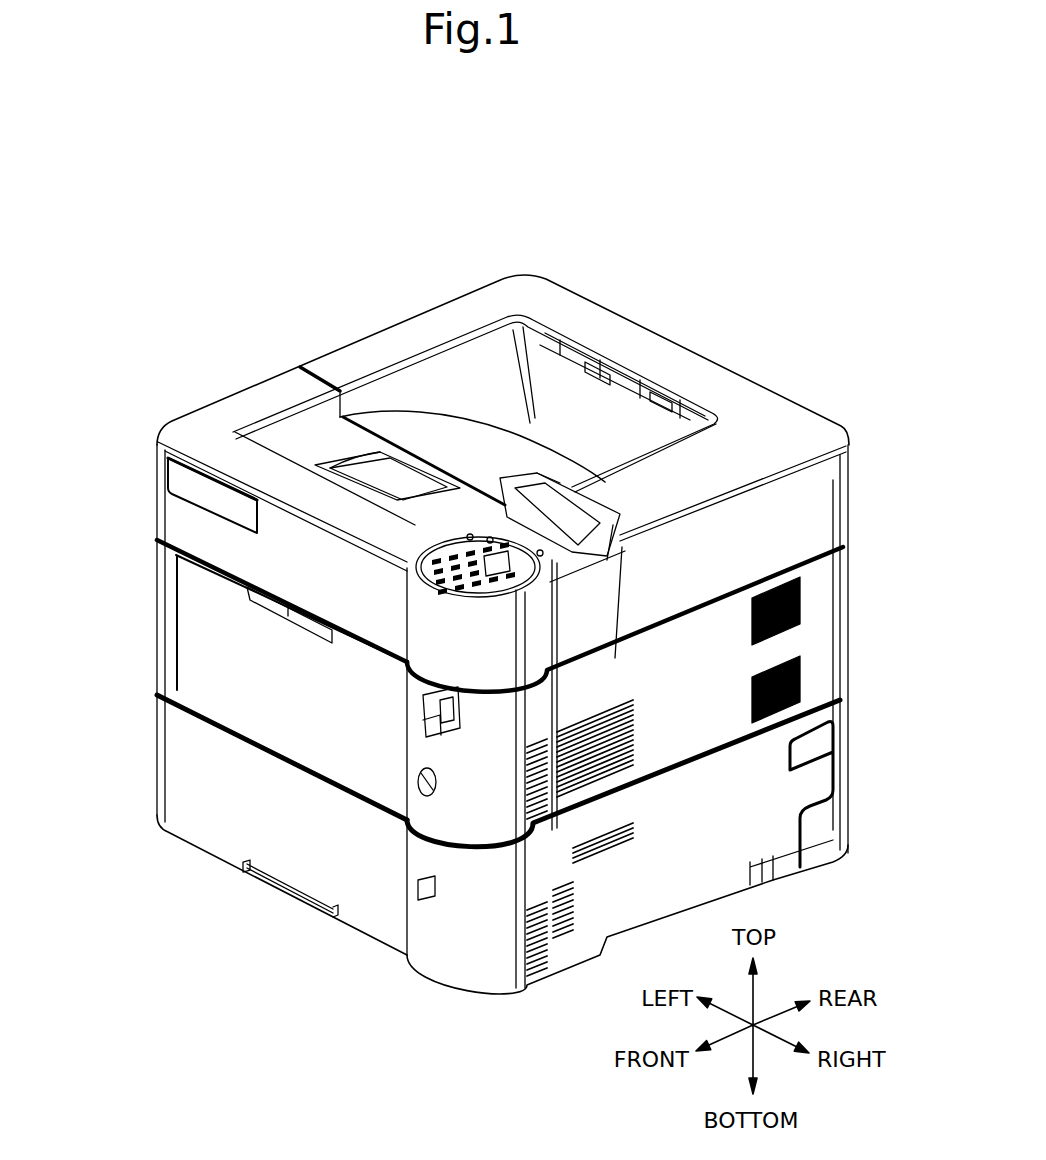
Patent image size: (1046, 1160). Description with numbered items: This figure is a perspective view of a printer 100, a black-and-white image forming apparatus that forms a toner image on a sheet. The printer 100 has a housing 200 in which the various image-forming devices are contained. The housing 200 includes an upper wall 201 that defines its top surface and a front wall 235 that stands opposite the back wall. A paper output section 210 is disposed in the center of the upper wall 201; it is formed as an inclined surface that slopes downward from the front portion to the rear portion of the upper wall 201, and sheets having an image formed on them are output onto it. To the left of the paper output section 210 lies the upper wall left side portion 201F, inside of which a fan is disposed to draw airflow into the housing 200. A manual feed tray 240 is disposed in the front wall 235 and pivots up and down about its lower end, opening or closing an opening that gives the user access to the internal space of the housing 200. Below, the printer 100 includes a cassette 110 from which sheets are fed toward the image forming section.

The printer 100 is at (796, 394).
The housing 200 is at (690, 347).
The upper wall 201 is at (573, 313).
The upper wall left side portion 201F is at (358, 352).
The paper output section 210 is at (447, 440).
The front wall 235 is at (172, 512).
The manual feed tray 240 is at (197, 620).
The cassette 110 is at (187, 778).